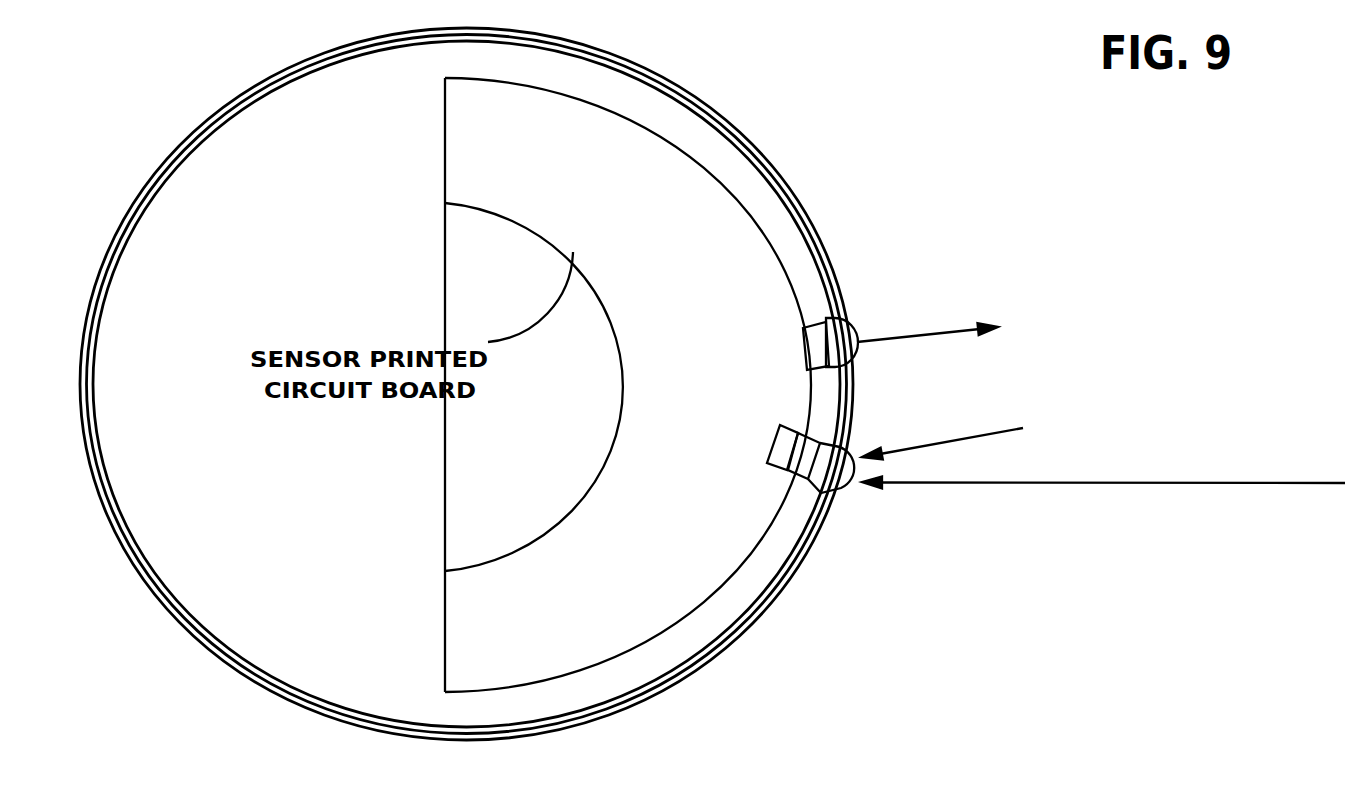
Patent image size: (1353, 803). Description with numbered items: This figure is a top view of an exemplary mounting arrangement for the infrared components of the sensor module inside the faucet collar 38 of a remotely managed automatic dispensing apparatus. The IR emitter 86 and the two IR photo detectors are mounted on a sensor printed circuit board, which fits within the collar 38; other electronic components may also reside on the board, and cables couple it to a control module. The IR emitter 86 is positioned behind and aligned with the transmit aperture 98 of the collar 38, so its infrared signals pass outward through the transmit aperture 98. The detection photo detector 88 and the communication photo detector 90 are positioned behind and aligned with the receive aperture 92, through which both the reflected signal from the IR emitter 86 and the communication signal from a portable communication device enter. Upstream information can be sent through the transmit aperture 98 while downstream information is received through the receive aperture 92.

The collar 38 is at (678, 97).
The IR emitter 86 is at (811, 322).
The detection photo detector 88 is at (795, 485).
The communication photo detector 90 is at (768, 470).
The receiver aperture 92 is at (850, 442).
The emitter aperture 98 is at (847, 318).